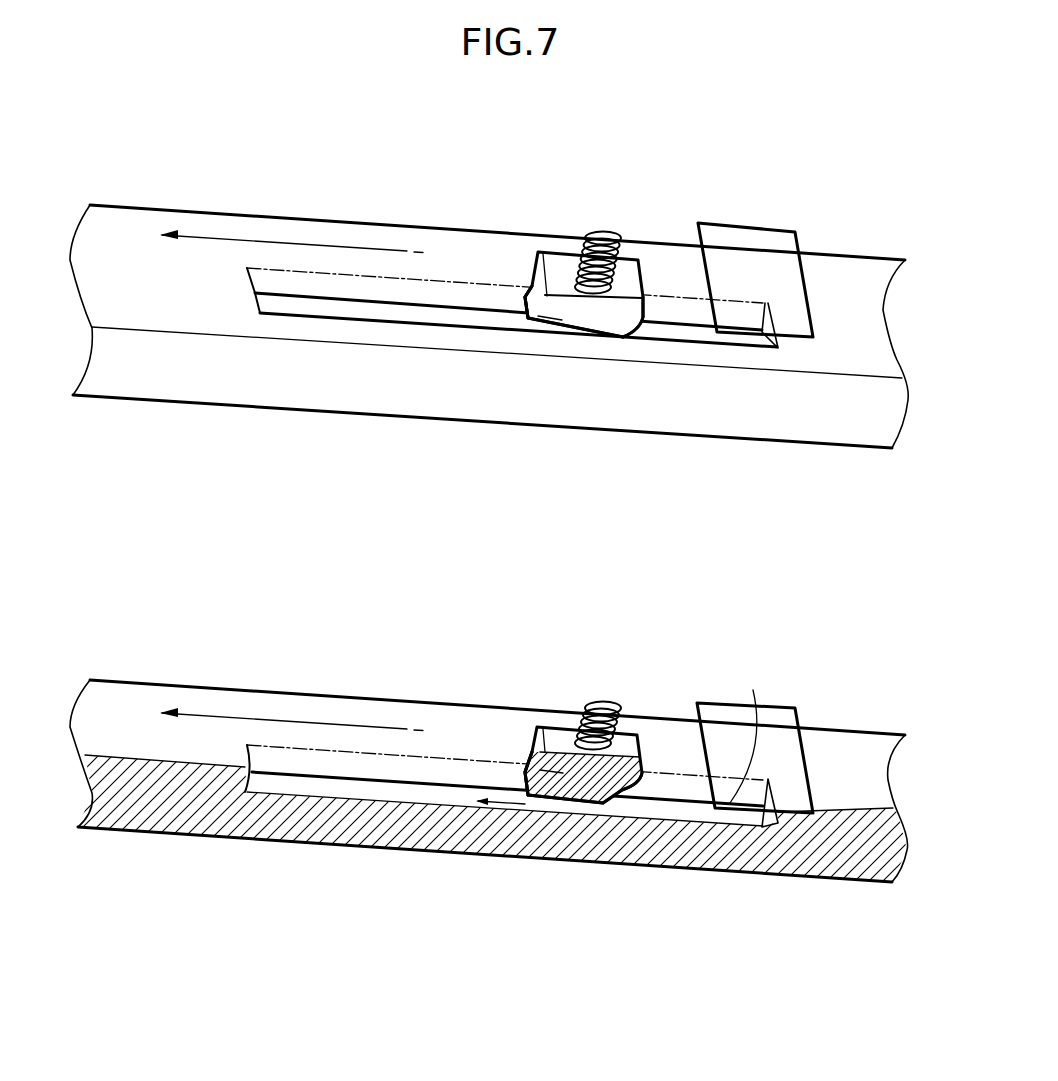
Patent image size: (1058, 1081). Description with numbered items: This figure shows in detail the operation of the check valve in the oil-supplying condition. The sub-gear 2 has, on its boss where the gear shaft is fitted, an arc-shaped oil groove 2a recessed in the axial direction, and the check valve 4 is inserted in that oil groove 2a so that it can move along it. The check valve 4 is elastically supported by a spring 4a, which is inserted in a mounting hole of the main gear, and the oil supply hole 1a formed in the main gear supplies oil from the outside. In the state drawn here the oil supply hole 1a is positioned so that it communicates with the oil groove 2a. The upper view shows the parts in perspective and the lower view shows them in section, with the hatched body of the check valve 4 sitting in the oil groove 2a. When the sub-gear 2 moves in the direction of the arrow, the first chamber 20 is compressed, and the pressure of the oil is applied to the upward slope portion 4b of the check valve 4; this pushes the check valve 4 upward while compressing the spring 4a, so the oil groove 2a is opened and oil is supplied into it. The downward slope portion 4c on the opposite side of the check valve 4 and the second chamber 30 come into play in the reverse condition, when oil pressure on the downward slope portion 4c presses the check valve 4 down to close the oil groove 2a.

The sub-gear 2 is at (867, 318).
The oil groove 2a is at (470, 312).
The check valve 4 is at (632, 272).
The spring 4a is at (587, 228).
The upward slope portion 4b is at (630, 334).
The downward slope portion 4c is at (541, 328).
The oil supply hole 1a is at (765, 232).
The first chamber 20 is at (665, 291).
The second chamber 30 is at (345, 276).